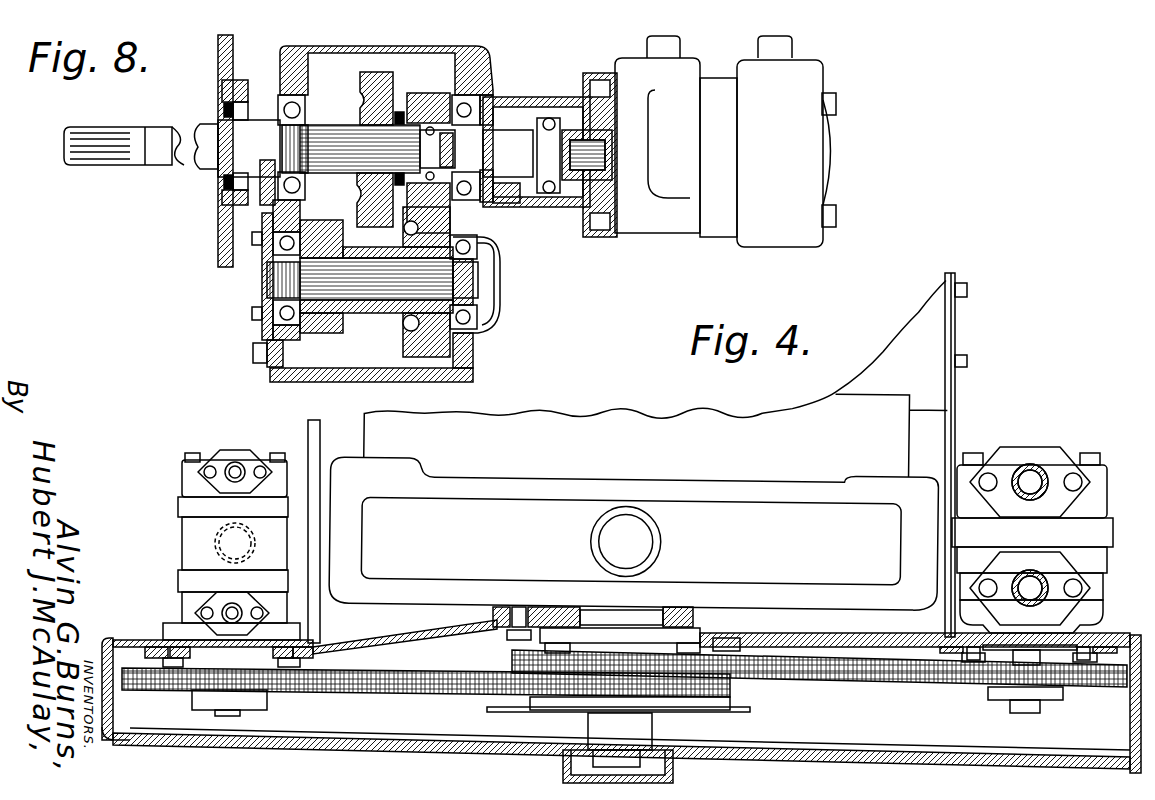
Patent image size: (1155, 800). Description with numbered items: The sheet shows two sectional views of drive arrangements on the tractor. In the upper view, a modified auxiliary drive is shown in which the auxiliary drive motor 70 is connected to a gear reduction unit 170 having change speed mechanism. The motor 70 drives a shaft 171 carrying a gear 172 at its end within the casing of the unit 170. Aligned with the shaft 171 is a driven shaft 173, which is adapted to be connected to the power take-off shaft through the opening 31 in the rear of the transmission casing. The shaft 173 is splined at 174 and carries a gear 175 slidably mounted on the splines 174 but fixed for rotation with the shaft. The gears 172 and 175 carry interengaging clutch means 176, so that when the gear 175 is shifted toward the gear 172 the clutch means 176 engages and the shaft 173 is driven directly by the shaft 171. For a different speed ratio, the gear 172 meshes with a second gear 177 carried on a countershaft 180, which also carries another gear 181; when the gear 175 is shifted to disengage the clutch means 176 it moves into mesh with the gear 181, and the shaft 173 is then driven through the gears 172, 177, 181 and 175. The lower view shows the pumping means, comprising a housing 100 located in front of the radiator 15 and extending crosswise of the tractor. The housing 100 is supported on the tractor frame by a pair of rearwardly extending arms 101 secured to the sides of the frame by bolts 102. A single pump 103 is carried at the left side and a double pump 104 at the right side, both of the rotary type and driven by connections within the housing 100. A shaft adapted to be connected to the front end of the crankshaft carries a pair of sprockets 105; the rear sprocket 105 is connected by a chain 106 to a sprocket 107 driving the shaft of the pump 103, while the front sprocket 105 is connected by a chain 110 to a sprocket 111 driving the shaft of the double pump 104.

In FIG. 8, the driven shaft 173 is at (160, 160).
In FIG. 8, the opening 31 is at (218, 190).
In FIG. 8, the gear 175 is at (375, 75).
In FIG. 8, the clutch means 176 is at (399, 110).
In FIG. 8, the gear 172 is at (433, 100).
In FIG. 8, the splines 174 is at (330, 137).
In FIG. 8, the shaft 171 is at (520, 168).
In FIG. 8, the auxiliary drive motor 70 is at (760, 215).
In FIG. 8, the countershaft 180 is at (300, 278).
In FIG. 8, the gear reduction unit 170 is at (503, 295).
In FIG. 8, the second gear 177 is at (440, 343).
In FIG. 8, the gear 181 is at (325, 323).
In FIG. 4, the housing 100 is at (790, 763).
In FIG. 4, the arms 101 is at (308, 432).
In FIG. 4, the bolts 102 is at (967, 361).
In FIG. 4, the radiator 15 is at (555, 524).
In FIG. 4, the double pump 104 is at (190, 536).
In FIG. 4, the single pump 103 is at (1095, 505).
In FIG. 4, the sprockets 105 is at (510, 655).
In FIG. 4, the chain 106 is at (878, 672).
In FIG. 4, the chain 110 is at (392, 690).
In FIG. 4, the sprocket 111 is at (175, 683).
In FIG. 4, the sprocket 107 is at (1098, 682).